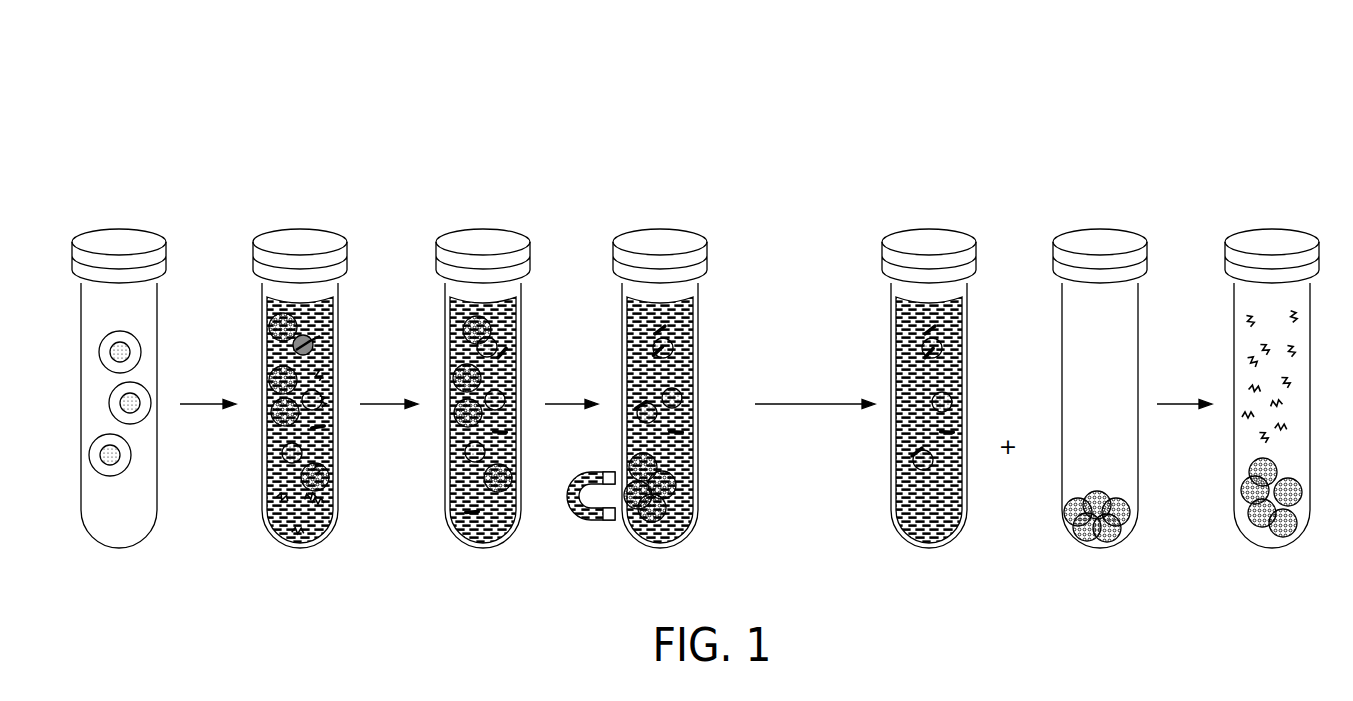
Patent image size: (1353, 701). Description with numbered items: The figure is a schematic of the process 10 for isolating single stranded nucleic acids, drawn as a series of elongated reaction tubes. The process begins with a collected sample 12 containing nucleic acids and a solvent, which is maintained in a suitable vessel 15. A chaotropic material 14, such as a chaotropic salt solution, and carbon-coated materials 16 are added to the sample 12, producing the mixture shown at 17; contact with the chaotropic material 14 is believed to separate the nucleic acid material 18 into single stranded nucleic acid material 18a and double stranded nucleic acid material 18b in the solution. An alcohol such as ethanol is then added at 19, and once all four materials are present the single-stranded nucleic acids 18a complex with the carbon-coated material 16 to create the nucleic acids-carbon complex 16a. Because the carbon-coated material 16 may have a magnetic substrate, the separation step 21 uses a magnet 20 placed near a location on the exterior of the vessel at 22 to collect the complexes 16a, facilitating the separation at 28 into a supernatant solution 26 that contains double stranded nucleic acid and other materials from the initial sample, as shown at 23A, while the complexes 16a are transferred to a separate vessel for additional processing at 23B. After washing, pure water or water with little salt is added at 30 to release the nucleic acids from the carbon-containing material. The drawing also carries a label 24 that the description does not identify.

The process 10 is at (154, 64).
The collected sample 12 is at (118, 538).
The chaotropic material 14 is at (318, 305).
The vessel 15 is at (118, 218).
The carbon-coated materials 16 is at (278, 406).
The nucleic acids-carbon complex 16a is at (460, 404).
The mixture of nucleic acids, chaotropic materials, and carbon-coated materials 17 is at (283, 241).
The nucleic acid material 18 is at (282, 460).
The single stranded nucleic acid material 18a is at (322, 498).
The double stranded nucleic acid material 18b is at (322, 428).
The alcohol addition 19 is at (483, 236).
The magnet 20 is at (591, 522).
The separation step 21 is at (666, 220).
The collection location on the vessel exterior 22 is at (678, 510).
The supernatant stage 23A is at (935, 220).
The separate vessel for additional processing 23B is at (1106, 220).
The tube 24 is at (621, 340).
The supernatant solution 26 is at (682, 362).
The process of separation 28 is at (828, 402).
The pure water addition 30 is at (1296, 366).